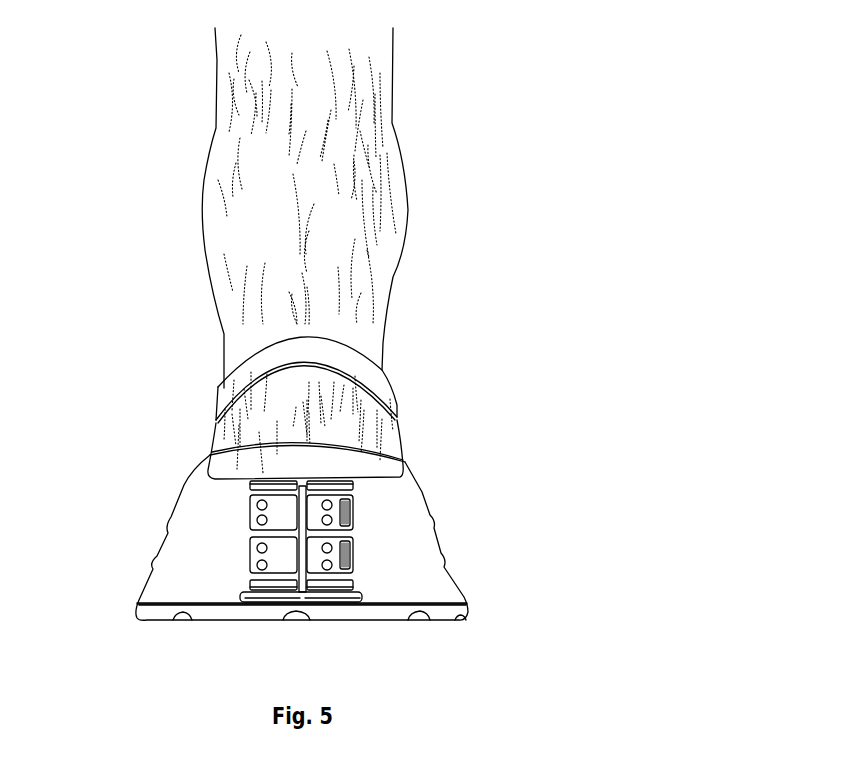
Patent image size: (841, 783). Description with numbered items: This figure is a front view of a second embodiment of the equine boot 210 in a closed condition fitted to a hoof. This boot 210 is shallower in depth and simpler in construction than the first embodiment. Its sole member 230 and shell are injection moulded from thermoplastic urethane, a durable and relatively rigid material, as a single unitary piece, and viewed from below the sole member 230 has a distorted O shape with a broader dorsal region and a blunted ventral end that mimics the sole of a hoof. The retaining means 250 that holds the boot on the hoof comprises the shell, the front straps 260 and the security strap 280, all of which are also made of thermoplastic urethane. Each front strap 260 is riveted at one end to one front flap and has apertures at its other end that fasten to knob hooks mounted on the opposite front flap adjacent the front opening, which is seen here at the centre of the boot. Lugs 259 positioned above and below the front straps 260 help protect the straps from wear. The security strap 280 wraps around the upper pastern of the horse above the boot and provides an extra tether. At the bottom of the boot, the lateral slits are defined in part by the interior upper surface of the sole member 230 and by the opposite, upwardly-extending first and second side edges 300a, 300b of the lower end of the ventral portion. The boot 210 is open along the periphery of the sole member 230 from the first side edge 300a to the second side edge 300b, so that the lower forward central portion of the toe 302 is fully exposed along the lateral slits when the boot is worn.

The boot 210 is at (448, 435).
The sole member 230 is at (210, 613).
The retaining means 250 is at (453, 582).
The lugs 259 is at (350, 492).
The front straps 260 is at (285, 512).
The security strap 280 is at (347, 353).
The first side edge 300a is at (240, 600).
The second side edge 300b is at (362, 597).
The toe 302 is at (303, 597).